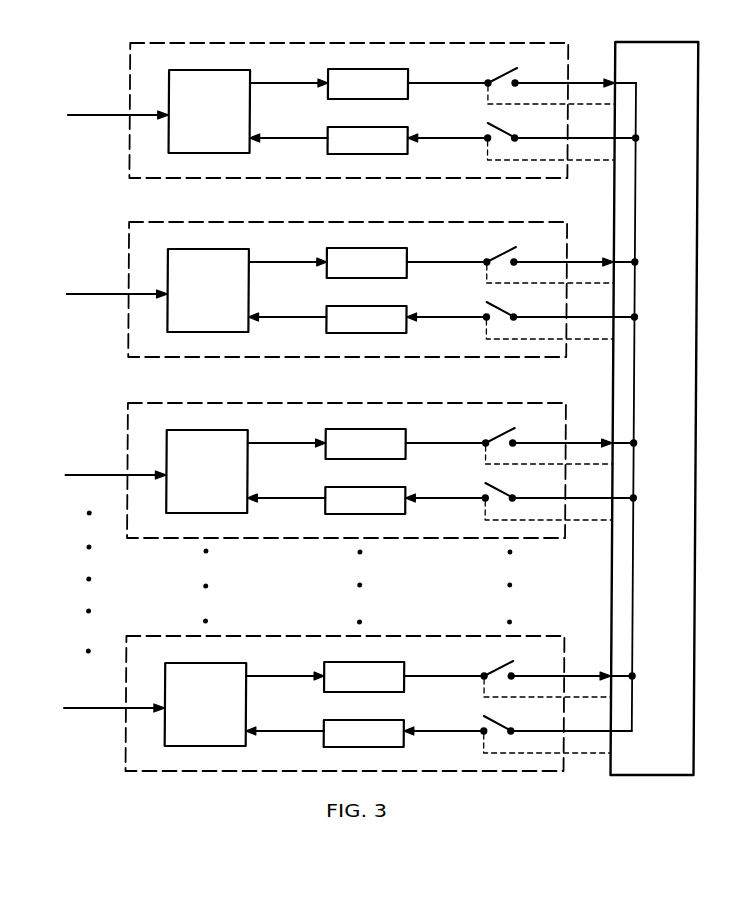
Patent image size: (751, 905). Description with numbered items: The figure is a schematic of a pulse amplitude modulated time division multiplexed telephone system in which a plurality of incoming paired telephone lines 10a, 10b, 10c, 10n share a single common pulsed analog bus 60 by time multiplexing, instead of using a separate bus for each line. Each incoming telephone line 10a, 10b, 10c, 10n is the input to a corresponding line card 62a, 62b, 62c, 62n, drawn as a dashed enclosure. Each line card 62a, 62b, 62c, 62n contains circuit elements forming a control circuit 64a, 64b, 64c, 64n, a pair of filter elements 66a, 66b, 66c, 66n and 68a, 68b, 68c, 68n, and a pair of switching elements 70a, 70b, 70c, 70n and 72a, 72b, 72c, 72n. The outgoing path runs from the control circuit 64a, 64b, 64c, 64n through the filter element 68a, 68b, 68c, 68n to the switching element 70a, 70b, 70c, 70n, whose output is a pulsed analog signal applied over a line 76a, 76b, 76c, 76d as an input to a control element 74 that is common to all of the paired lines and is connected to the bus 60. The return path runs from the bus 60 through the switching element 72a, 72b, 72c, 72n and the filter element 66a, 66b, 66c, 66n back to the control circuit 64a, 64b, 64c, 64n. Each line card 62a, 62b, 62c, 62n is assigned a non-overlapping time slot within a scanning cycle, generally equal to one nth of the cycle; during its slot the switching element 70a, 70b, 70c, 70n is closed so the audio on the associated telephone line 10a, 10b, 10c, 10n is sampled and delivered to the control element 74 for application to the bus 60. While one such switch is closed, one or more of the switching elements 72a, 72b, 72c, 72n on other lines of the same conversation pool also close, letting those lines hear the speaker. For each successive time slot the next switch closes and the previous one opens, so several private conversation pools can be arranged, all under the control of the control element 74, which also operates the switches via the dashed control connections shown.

The incoming paired telephone line 10a is at (103, 113).
The incoming paired telephone line 10b is at (116, 281).
The incoming paired telephone line 10c is at (114, 462).
The incoming paired telephone line 10n is at (112, 692).
The common pulsed analog bus 60 is at (637, 187).
The line card 62a is at (128, 55).
The line card 62b is at (315, 285).
The line card 62c is at (314, 466).
The line card 62n is at (312, 695).
The control circuit 64a is at (196, 123).
The control circuit 64b is at (208, 290).
The control circuit 64c is at (207, 471).
The control circuit 64n is at (206, 704).
The filter element 66a is at (387, 127).
The filter element 66b is at (366, 307).
The filter element 66c is at (365, 488).
The filter element 66n is at (364, 722).
The filter element 68a is at (387, 69).
The filter element 68b is at (367, 251).
The filter element 68c is at (366, 432).
The filter element 68n is at (364, 666).
The switching element 70a is at (500, 73).
The switching element 70b is at (534, 256).
The switching element 70c is at (533, 437).
The switching element 70n is at (531, 671).
The switching element 72a is at (505, 131).
The switching element 72b is at (548, 314).
The switching element 72c is at (547, 495).
The switching element 72n is at (546, 729).
The control element 74 is at (699, 73).
The line 76a is at (582, 83).
The line 76b is at (574, 248).
The line 76c is at (573, 429).
The line 76d is at (571, 663).